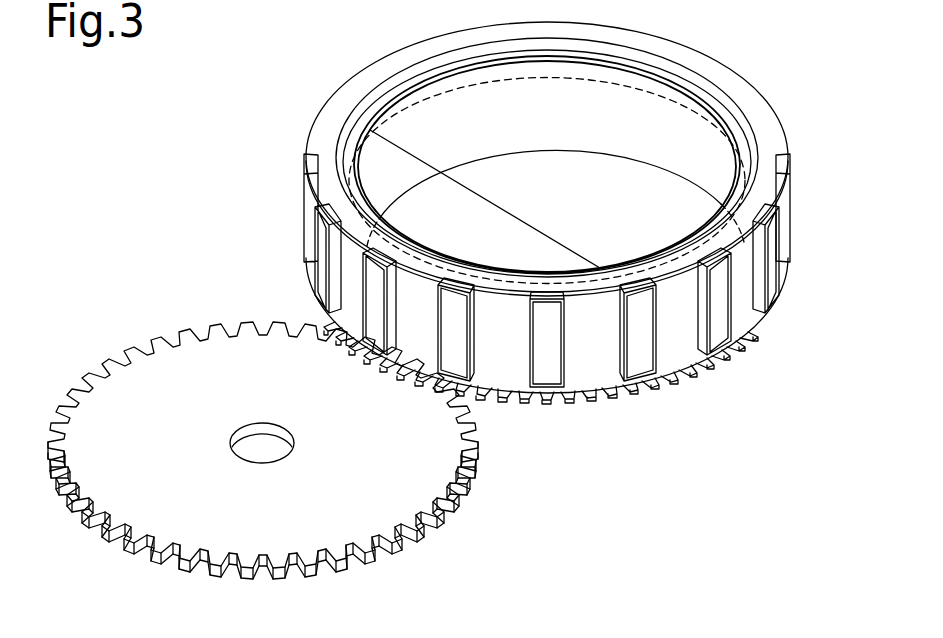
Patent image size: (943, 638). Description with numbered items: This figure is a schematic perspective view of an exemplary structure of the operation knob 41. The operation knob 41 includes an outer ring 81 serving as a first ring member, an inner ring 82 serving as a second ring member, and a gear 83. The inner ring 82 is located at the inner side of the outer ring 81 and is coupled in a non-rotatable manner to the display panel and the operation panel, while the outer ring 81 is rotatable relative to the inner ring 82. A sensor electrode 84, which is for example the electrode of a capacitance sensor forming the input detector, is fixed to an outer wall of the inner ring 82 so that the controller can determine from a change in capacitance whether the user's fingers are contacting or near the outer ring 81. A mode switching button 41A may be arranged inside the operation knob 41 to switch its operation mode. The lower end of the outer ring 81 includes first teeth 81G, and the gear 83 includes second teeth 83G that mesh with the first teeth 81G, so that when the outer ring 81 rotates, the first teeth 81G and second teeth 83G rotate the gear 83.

The operation knob 41 is at (293, 58).
The mode switching button 41A is at (506, 210).
The outer ring 81 is at (757, 89).
The first teeth 81G is at (587, 417).
The inner ring 82 is at (665, 67).
The gear 83 is at (237, 353).
The second teeth 83G is at (458, 492).
The sensor electrode 84 is at (793, 201).